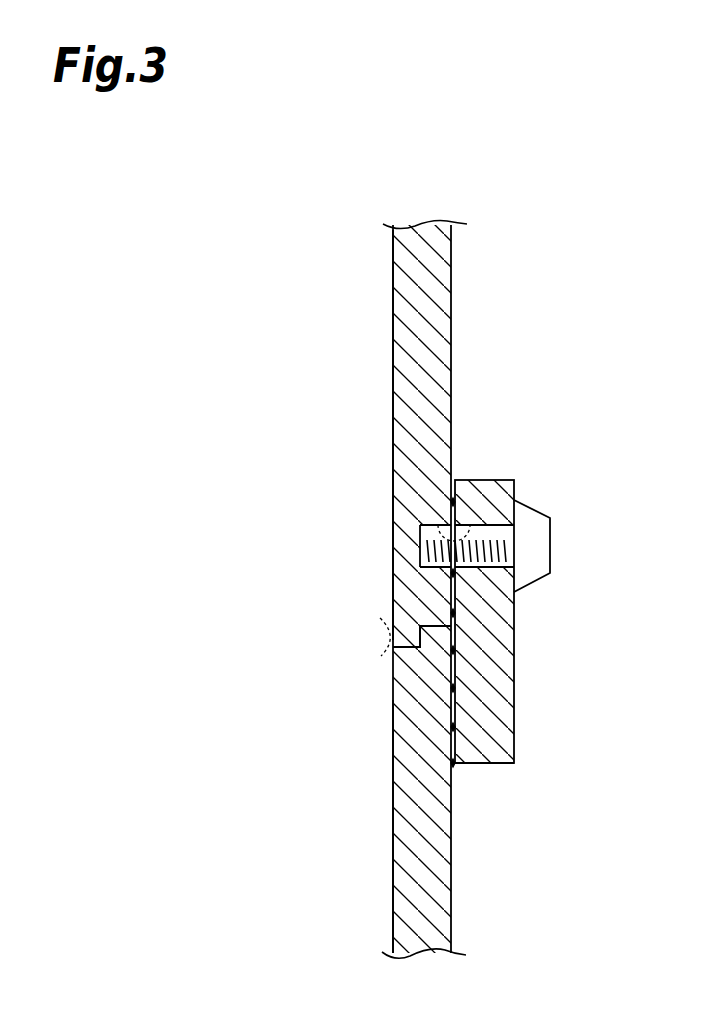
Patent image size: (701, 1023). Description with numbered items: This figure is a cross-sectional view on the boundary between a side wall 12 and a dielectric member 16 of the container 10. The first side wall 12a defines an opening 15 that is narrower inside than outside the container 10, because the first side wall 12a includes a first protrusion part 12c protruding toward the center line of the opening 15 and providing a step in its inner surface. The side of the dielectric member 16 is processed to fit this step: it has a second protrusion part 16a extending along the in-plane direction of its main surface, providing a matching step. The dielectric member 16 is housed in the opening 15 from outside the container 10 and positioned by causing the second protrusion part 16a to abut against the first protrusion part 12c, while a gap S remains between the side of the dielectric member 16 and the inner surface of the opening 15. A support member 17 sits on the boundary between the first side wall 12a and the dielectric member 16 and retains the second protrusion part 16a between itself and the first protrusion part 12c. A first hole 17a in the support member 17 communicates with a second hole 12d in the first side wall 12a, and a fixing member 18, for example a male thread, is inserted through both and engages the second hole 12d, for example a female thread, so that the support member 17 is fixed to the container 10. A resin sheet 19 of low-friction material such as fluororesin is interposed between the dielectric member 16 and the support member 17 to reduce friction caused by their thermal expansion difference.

The container 10 is at (510, 330).
The side wall 12 is at (393, 322).
The first side wall 12a is at (393, 407).
The first protrusion part 12c is at (409, 632).
The second hole 12d is at (476, 525).
The opening 15 is at (299, 801).
The dielectric member 16 is at (402, 722).
The second protrusion part 16a is at (430, 632).
The support member 17 is at (514, 688).
The first hole 17a is at (510, 530).
The fixing member 18 is at (541, 543).
The resin sheet 19 is at (456, 764).
The gap S is at (393, 660).